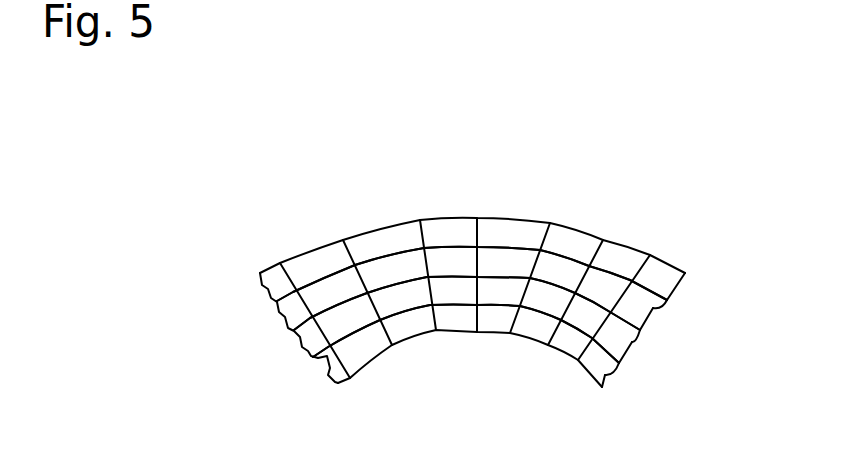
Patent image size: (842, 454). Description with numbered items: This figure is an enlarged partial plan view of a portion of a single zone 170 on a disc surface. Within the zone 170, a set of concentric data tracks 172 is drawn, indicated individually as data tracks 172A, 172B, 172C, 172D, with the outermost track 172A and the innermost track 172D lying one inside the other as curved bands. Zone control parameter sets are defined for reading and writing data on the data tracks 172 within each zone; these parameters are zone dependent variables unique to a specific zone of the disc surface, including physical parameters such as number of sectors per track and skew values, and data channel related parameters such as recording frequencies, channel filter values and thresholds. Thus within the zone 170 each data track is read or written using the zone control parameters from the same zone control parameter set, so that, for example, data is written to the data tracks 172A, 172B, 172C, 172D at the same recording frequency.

The zone 170 is at (215, 163).
The data tracks 172 is at (615, 276).
The data track 172A is at (672, 280).
The data track 172B is at (651, 308).
The data track 172C is at (631, 343).
The data track 172D is at (601, 368).